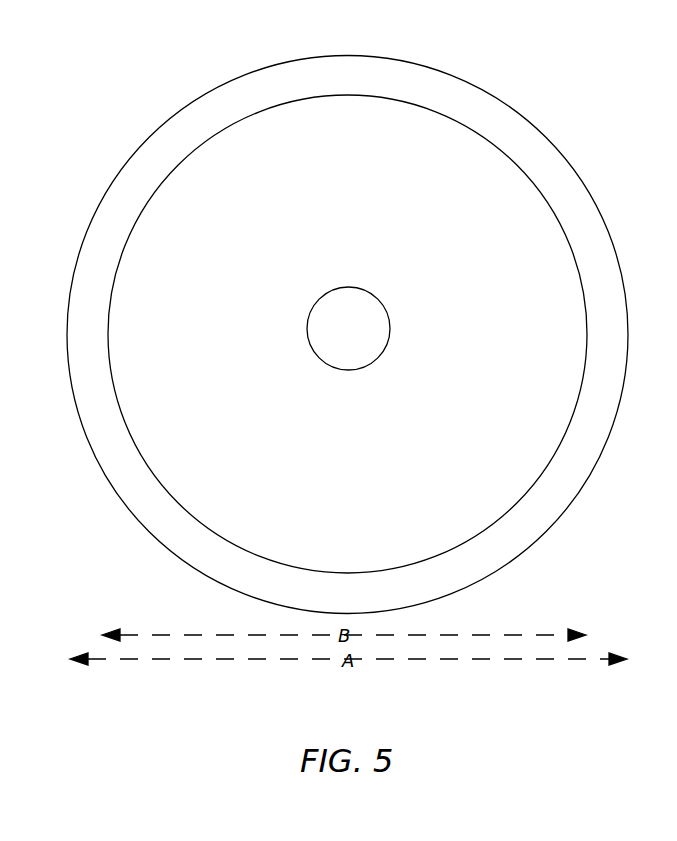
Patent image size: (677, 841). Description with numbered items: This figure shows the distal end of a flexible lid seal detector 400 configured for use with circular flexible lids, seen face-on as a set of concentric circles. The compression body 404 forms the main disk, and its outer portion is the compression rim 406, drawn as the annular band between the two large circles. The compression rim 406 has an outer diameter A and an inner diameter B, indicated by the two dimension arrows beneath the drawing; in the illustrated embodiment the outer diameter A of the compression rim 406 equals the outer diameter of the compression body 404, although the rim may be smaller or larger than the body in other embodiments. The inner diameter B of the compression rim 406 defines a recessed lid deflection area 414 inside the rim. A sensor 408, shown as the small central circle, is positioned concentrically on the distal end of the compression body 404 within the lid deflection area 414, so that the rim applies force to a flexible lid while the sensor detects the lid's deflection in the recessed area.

The disk assembly 400 is at (351, 308).
The compression body 404 is at (367, 503).
The compression rim 406 is at (452, 100).
The sensor 408 is at (353, 287).
The lid deflection area 414 is at (516, 193).